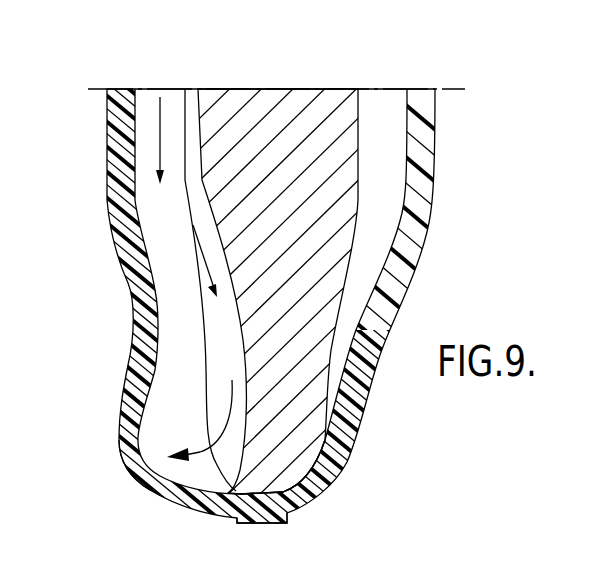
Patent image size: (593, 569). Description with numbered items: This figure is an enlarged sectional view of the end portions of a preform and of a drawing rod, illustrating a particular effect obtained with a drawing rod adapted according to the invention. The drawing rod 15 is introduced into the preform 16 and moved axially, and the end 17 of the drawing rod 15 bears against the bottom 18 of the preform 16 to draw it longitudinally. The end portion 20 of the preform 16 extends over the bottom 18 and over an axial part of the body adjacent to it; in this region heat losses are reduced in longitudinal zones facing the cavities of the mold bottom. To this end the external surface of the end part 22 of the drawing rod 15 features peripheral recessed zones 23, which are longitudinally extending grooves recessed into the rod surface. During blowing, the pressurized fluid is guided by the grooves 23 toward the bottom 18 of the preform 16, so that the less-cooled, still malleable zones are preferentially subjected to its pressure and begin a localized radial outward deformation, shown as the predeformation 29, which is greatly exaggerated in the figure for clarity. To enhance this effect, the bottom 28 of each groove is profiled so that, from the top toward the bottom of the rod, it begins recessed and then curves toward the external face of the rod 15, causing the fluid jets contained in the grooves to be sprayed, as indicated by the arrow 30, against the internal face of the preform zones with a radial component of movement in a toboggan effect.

The drawing rod 15 is at (274, 84).
The preform 16 is at (429, 83).
The end of the drawing rod 17 is at (280, 455).
The bottom of the preform 18 is at (308, 489).
The end portion of the preform 20 is at (424, 162).
The end part of the drawing rod 22 is at (326, 233).
The recessed zones 23 is at (210, 292).
The bottom of the groove 28 is at (240, 345).
The predeformation 29 is at (150, 477).
The arrow 30 is at (180, 452).